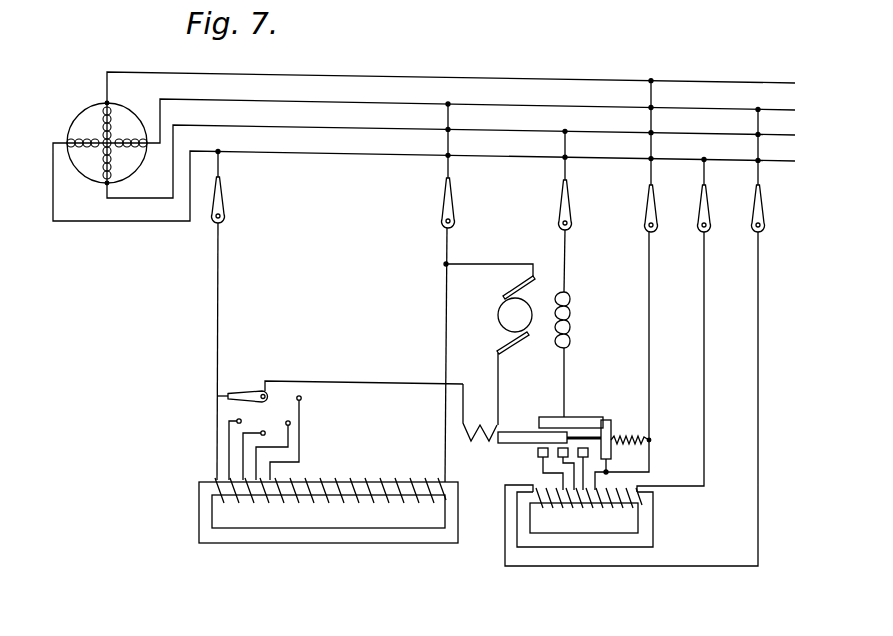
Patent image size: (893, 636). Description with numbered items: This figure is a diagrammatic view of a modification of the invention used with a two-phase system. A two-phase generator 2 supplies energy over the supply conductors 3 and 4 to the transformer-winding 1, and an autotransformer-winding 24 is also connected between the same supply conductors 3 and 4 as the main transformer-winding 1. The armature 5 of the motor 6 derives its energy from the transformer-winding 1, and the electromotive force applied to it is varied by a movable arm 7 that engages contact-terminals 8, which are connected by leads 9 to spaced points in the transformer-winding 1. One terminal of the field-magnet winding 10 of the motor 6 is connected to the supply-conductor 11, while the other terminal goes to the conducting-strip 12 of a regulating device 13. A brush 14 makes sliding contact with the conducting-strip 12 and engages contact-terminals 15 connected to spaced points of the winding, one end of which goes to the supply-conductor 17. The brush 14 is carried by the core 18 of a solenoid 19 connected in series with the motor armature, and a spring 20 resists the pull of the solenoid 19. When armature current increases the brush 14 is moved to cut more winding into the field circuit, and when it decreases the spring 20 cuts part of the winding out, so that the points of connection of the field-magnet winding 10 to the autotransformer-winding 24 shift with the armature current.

The transformer-winding 1 is at (338, 470).
The two-phase generator 2 is at (78, 116).
The supply-conductor 3 is at (532, 160).
The supply-conductor 4 is at (530, 107).
The armature 5 is at (497, 316).
The motor 6 is at (541, 291).
The movable arm 7 is at (243, 390).
The contact-terminals 8 is at (252, 443).
The leads 9 is at (302, 440).
The field-magnet winding 10 is at (569, 303).
The supply-conductor 11 is at (532, 133).
The conducting-strip 12 is at (578, 415).
The regulating device 13 is at (618, 430).
The brush 14 is at (606, 419).
The contact-terminals 15 is at (537, 452).
The supply-conductor 17 is at (536, 80).
The core 18 is at (520, 427).
The solenoid 19 is at (480, 412).
The spring 20 is at (632, 461).
The autotransformer-winding 24 is at (631, 399).